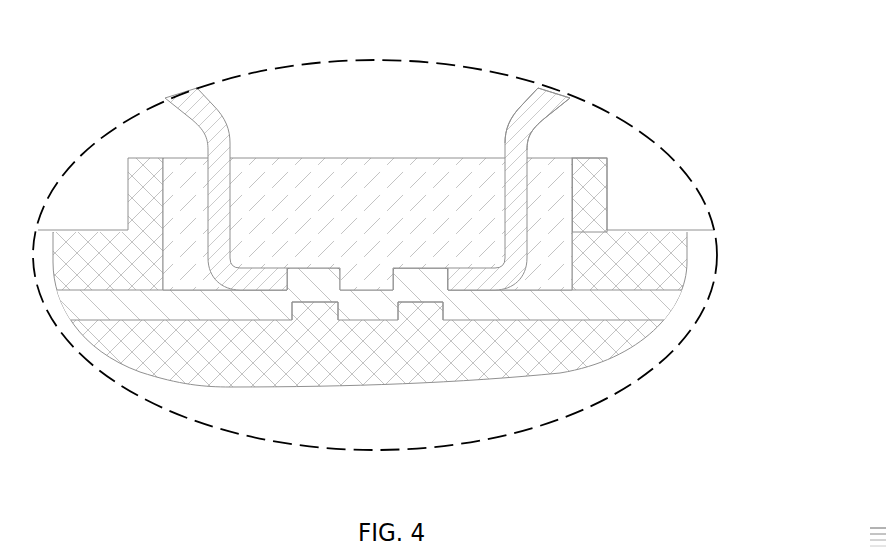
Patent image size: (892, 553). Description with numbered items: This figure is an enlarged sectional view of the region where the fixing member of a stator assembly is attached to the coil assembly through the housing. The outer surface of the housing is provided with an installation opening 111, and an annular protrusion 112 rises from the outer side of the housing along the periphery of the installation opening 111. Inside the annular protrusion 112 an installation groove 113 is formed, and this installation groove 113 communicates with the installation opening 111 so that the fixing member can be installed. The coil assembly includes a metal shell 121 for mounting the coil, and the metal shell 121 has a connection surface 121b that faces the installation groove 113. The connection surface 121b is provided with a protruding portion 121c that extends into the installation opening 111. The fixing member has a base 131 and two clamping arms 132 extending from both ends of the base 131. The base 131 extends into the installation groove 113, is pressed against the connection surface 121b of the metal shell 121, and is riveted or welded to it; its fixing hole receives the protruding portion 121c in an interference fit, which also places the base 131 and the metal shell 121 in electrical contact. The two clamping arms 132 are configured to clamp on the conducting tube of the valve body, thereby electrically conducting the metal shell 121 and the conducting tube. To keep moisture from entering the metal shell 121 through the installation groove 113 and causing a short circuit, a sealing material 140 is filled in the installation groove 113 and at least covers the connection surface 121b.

The installation opening 111 is at (572, 280).
The annular protrusion 112 is at (598, 175).
The installation groove 113 is at (572, 163).
The metal shell 121 is at (640, 303).
The connection surface 121b is at (455, 307).
The protruding portion 121c is at (410, 273).
The base 131 is at (464, 280).
The clamping arm 132 is at (521, 117).
The sealing material 140 is at (188, 207).